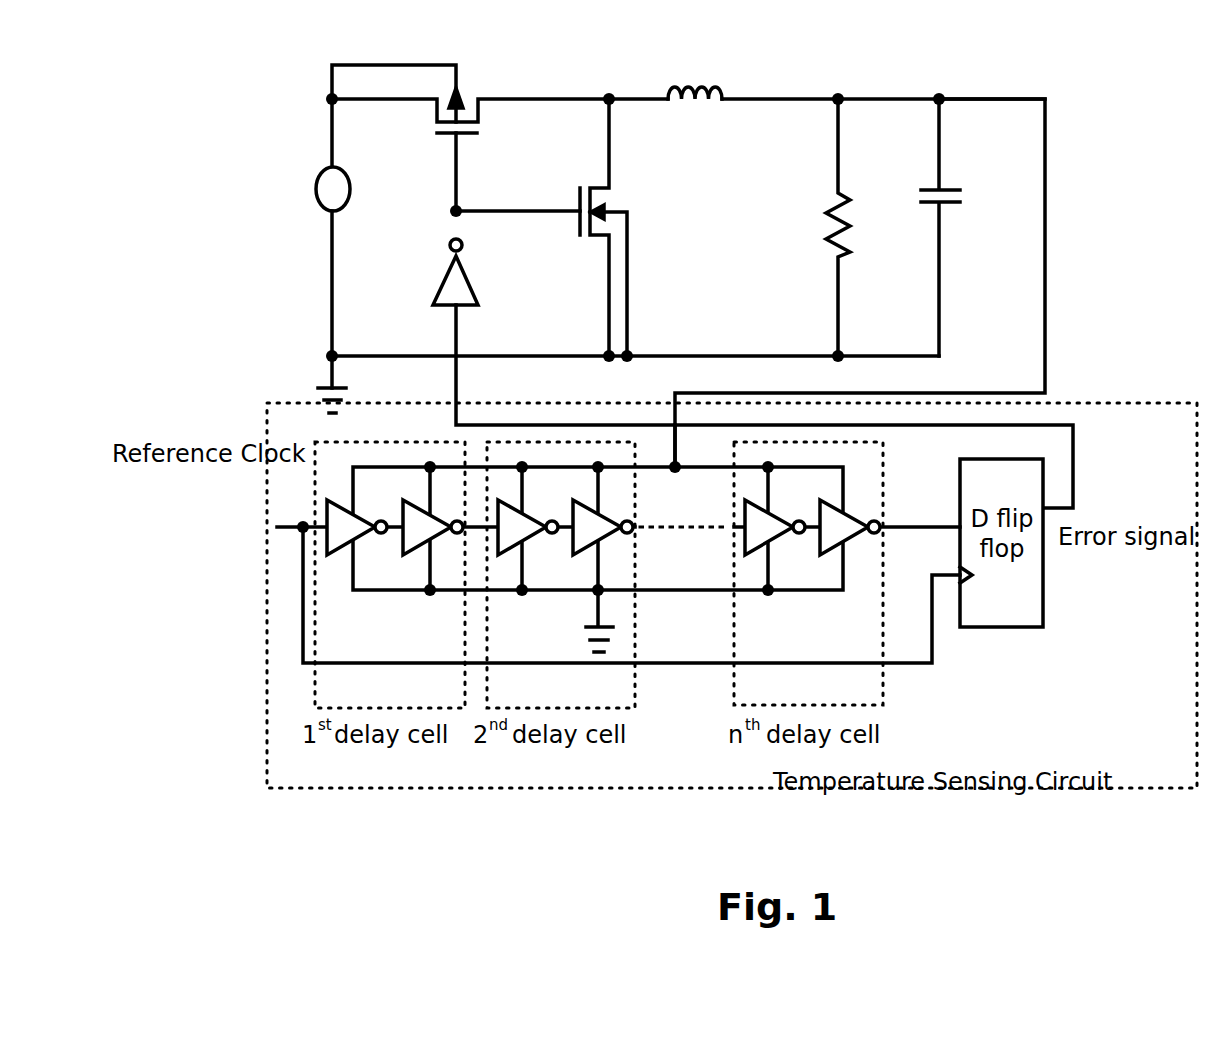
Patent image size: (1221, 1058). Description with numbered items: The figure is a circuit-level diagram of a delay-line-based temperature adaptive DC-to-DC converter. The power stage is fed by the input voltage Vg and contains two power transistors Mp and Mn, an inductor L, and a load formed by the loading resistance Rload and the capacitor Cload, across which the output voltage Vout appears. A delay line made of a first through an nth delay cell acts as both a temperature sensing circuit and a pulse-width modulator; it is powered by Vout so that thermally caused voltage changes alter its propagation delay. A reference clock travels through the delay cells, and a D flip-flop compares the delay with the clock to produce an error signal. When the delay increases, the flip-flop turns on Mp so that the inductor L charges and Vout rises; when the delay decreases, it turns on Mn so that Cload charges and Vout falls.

The power transistor Mp is at (404, 115).
The power transistor Mn is at (591, 227).
The inductor L is at (695, 116).
The input voltage Vg is at (314, 256).
The loading resistance Rload is at (869, 227).
The capacitor Cload is at (972, 227).
The output voltage Vout is at (1029, 101).